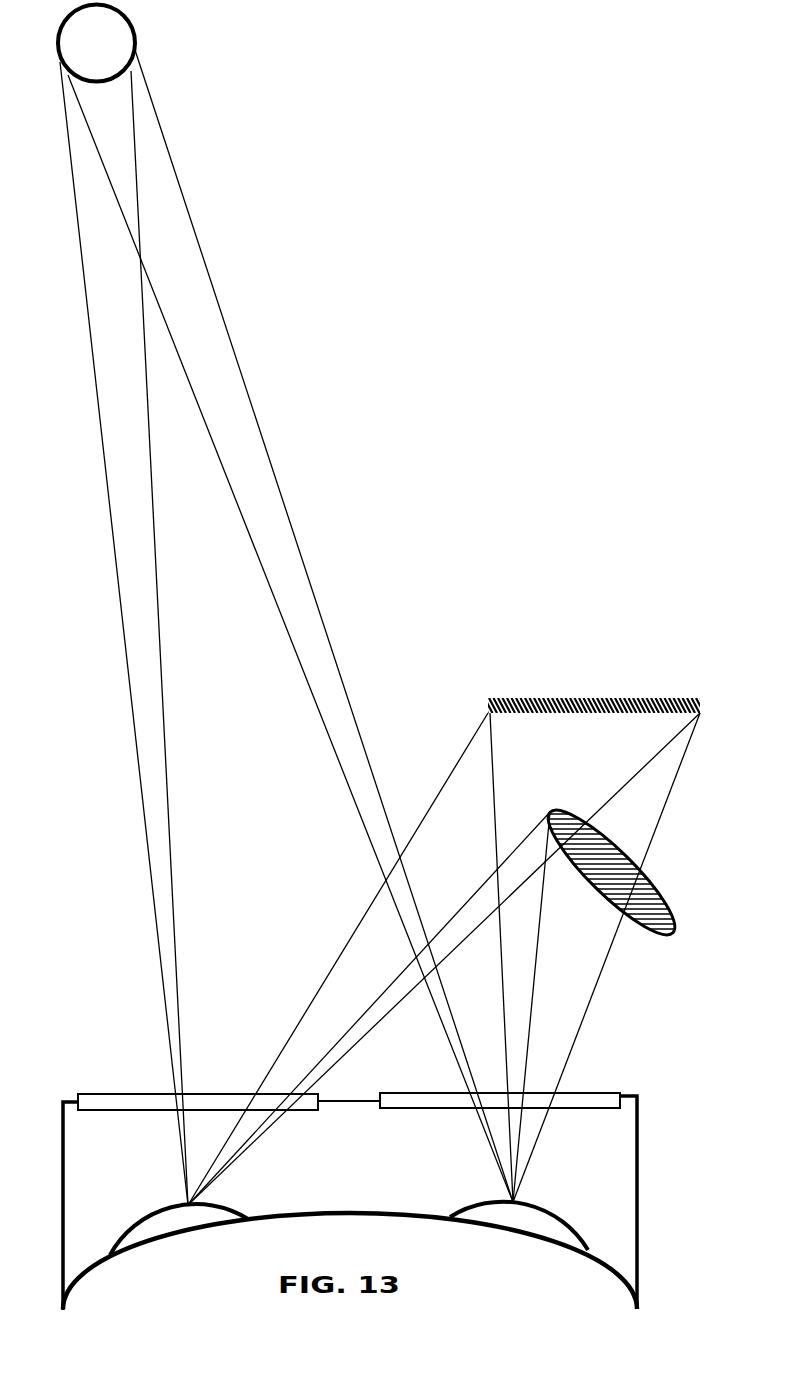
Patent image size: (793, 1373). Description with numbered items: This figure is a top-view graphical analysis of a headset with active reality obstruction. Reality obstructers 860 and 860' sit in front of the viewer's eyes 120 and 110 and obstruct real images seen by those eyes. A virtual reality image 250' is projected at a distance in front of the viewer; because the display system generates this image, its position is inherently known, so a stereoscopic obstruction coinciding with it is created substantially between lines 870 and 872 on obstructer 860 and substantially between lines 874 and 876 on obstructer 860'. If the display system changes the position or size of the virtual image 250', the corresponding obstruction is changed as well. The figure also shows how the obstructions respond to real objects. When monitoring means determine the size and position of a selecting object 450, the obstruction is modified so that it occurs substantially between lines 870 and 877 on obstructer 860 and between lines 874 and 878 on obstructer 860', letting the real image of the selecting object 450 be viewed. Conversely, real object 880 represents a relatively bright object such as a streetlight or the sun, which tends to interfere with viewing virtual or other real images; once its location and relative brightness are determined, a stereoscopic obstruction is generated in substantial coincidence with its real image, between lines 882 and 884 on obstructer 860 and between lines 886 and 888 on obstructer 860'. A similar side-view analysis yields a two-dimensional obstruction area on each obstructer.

The real object 880 is at (125, 35).
The line 882 is at (288, 515).
The line 884 is at (258, 567).
The line 886 is at (163, 680).
The line 888 is at (130, 710).
The virtual reality image 250' is at (594, 692).
The line 870 is at (691, 739).
The line 872 is at (492, 748).
The line 874 is at (657, 748).
The line 876 is at (463, 750).
The line 877 is at (538, 946).
The line 878 is at (491, 876).
The selecting object 450 is at (661, 888).
The reality obstructer 860 is at (533, 1086).
The reality obstructer 860' is at (171, 1088).
The eye 110 is at (150, 1218).
The eye 120 is at (552, 1213).